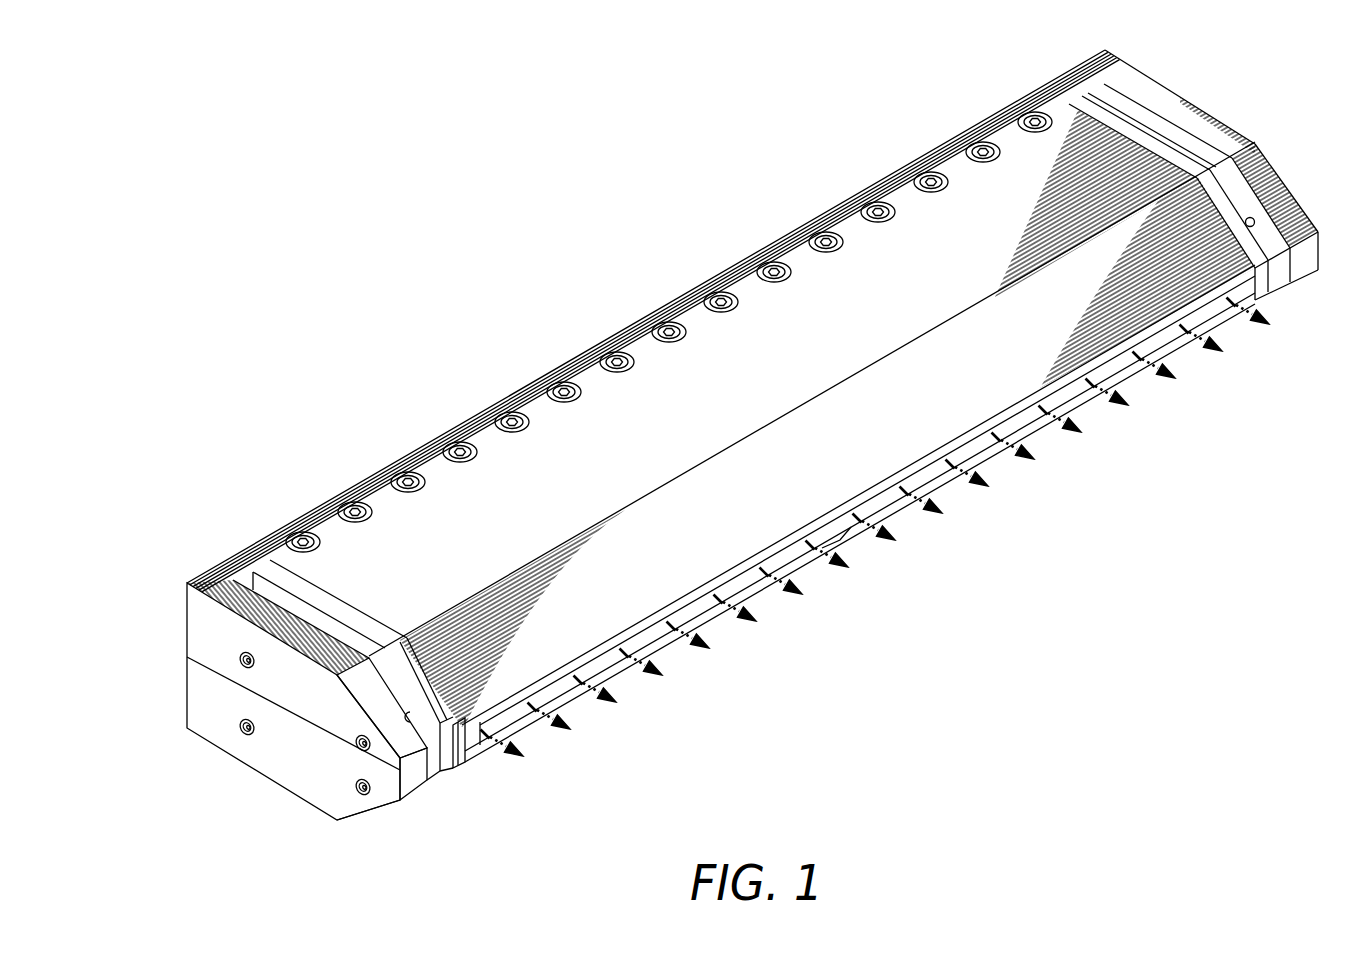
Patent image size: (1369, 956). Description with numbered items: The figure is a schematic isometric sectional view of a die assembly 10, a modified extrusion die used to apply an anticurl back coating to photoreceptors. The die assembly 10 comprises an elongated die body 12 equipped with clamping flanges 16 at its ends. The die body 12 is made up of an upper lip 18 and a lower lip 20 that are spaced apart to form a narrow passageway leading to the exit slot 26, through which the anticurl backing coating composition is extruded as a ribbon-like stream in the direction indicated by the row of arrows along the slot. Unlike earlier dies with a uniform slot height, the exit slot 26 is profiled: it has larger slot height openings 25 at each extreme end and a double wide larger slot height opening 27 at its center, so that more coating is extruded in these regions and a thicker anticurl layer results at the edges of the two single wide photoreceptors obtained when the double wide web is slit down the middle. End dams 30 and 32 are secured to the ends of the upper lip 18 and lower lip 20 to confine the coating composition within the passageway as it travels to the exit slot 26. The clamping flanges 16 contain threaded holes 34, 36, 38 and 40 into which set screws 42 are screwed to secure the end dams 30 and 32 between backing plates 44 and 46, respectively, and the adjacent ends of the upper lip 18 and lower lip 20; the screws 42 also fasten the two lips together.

The die assembly 10 is at (484, 392).
The die body 12 is at (721, 388).
The clamping flanges 16 is at (1166, 87).
The upper lip 18 is at (767, 385).
The lower lip 20 is at (481, 757).
The larger slot height openings 25 is at (508, 720).
The exit slot 26 is at (1055, 418).
The double wide larger slot height opening 27 is at (850, 530).
The end dam 30 is at (461, 767).
The end dam 32 is at (1260, 297).
The threaded hole 34 is at (240, 658).
The threaded hole 36 is at (240, 731).
The threaded hole 38 is at (356, 749).
The threaded hole 40 is at (356, 788).
The set screws 42 is at (240, 729).
The backing plate 44 is at (445, 765).
The backing plate 46 is at (1230, 190).